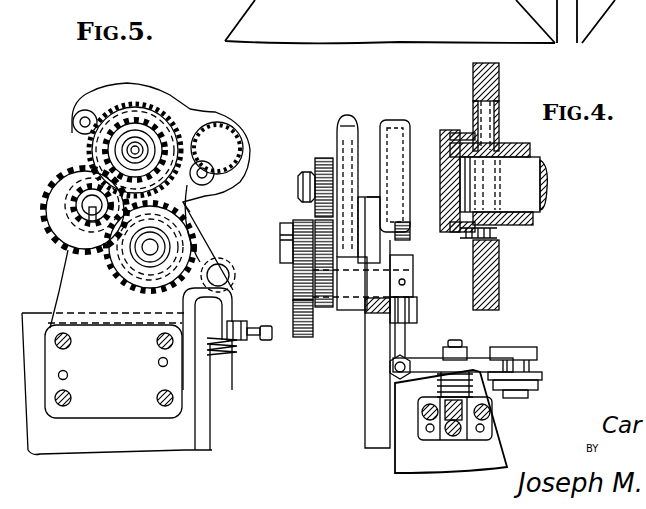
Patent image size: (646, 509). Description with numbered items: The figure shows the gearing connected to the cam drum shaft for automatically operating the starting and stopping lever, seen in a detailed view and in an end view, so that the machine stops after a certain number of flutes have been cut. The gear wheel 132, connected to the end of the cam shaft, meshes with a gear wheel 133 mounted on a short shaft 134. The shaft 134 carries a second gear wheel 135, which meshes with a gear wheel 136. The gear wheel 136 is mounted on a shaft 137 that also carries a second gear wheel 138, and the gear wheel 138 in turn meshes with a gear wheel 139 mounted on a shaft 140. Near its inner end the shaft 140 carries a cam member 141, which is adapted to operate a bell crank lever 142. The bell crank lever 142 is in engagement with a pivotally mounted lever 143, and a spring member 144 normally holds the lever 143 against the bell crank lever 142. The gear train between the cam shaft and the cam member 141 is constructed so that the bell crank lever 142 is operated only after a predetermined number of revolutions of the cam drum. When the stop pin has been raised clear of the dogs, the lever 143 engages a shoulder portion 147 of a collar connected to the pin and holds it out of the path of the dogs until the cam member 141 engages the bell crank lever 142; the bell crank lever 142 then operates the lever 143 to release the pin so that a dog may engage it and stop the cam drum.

In FIG. 5, the gear wheel 132 is at (227, 127).
In FIG. 4, the gear wheel 132 is at (412, 150).
In FIG. 5, the gear wheel 133 is at (178, 100).
In FIG. 4, the gear wheel 133 is at (397, 121).
In FIG. 5, the short shaft 134 is at (137, 150).
In FIG. 4, the short shaft 134 is at (302, 173).
In FIG. 5, the second gear wheel 135 is at (123, 128).
In FIG. 4, the second gear wheel 135 is at (328, 159).
In FIG. 5, the gear wheel 136 is at (52, 187).
In FIG. 4, the gear wheel 136 is at (299, 213).
In FIG. 5, the shaft 137 is at (82, 198).
In FIG. 4, the shaft 137 is at (302, 228).
In FIG. 5, the second gear wheel 138 is at (85, 205).
In FIG. 4, the second gear wheel 138 is at (308, 222).
In FIG. 5, the gear wheel 139 is at (186, 224).
In FIG. 4, the gear wheel 139 is at (308, 339).
In FIG. 5, the shaft 140 is at (150, 247).
In FIG. 5, the cam member 141 is at (213, 253).
In FIG. 5, the bell crank lever 142 is at (231, 310).
In FIG. 4, the bell crank lever 142 is at (395, 333).
In FIG. 5, the pivotally mounted lever 143 is at (233, 322).
In FIG. 4, the pivotally mounted lever 143 is at (420, 366).
In FIG. 5, the spring member 144 is at (233, 353).
In FIG. 4, the spring member 144 is at (473, 367).
In FIG. 4, the shoulder portion 147 is at (540, 367).